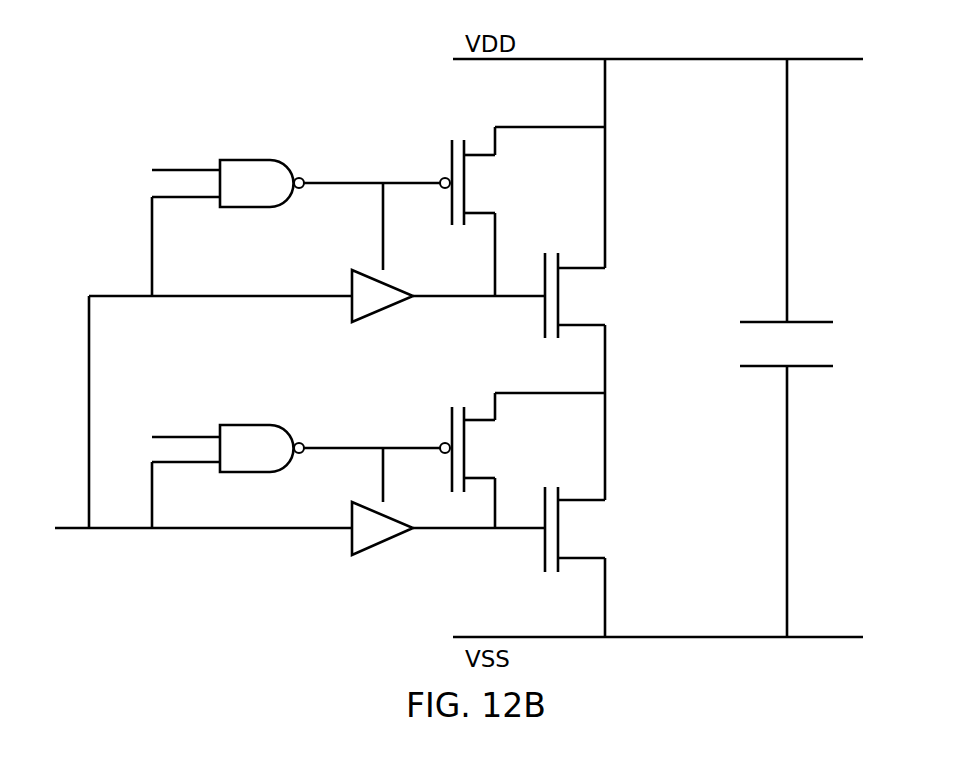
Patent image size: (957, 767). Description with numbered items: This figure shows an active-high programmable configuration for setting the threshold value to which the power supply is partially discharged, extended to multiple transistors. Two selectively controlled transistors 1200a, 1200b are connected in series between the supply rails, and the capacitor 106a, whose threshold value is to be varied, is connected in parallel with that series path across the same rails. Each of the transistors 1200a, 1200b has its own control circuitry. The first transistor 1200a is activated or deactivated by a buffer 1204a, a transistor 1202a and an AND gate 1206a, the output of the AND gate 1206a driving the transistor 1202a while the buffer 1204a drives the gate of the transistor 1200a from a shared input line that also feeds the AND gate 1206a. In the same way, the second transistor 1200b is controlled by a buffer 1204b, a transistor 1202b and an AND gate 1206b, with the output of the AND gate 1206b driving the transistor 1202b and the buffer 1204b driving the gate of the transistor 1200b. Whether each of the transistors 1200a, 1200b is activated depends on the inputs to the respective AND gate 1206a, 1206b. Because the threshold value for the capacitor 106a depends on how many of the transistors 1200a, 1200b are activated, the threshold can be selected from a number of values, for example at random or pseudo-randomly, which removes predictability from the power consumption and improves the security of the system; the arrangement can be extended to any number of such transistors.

The AND gate 1206a is at (253, 160).
The AND gate 1206b is at (253, 425).
The buffer 1204a is at (383, 310).
The buffer 1204b is at (383, 542).
The transistor 1202a is at (447, 165).
The transistor 1202b is at (447, 432).
The transistor 1200a is at (592, 323).
The transistor 1200b is at (592, 502).
The capacitor 106a is at (810, 321).